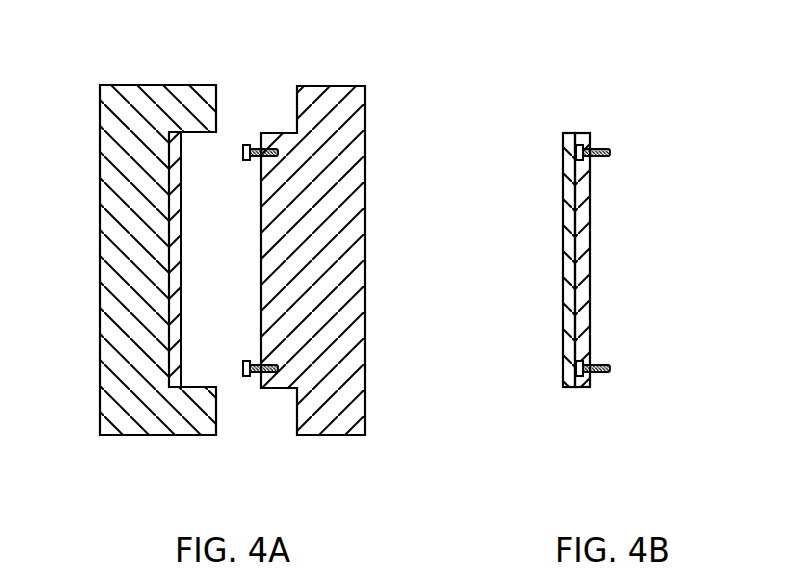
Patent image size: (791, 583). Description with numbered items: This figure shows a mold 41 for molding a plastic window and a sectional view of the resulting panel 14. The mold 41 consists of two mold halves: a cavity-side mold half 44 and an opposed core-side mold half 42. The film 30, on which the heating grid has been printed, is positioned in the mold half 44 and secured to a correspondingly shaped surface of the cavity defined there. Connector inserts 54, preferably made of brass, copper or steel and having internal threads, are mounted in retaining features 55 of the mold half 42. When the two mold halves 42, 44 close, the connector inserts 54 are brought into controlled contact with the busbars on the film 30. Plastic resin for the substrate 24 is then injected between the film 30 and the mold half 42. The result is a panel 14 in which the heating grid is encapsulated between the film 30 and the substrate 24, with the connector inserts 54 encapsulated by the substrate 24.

In FIG. 4B, the panel 14 is at (640, 247).
In FIG. 4B, the substrate 24 is at (580, 235).
In FIG. 4A, the film 30 is at (172, 333).
In FIG. 4B, the film 30 is at (568, 235).
In FIG. 4A, the mold 41 is at (118, 57).
In FIG. 4A, the mold half 42 is at (342, 192).
In FIG. 4A, the mold half 44 is at (123, 215).
In FIG. 4A, the connector inserts 54 is at (246, 144).
In FIG. 4B, the connector inserts 54 is at (598, 145).
In FIG. 4A, the retaining features 55 is at (266, 140).